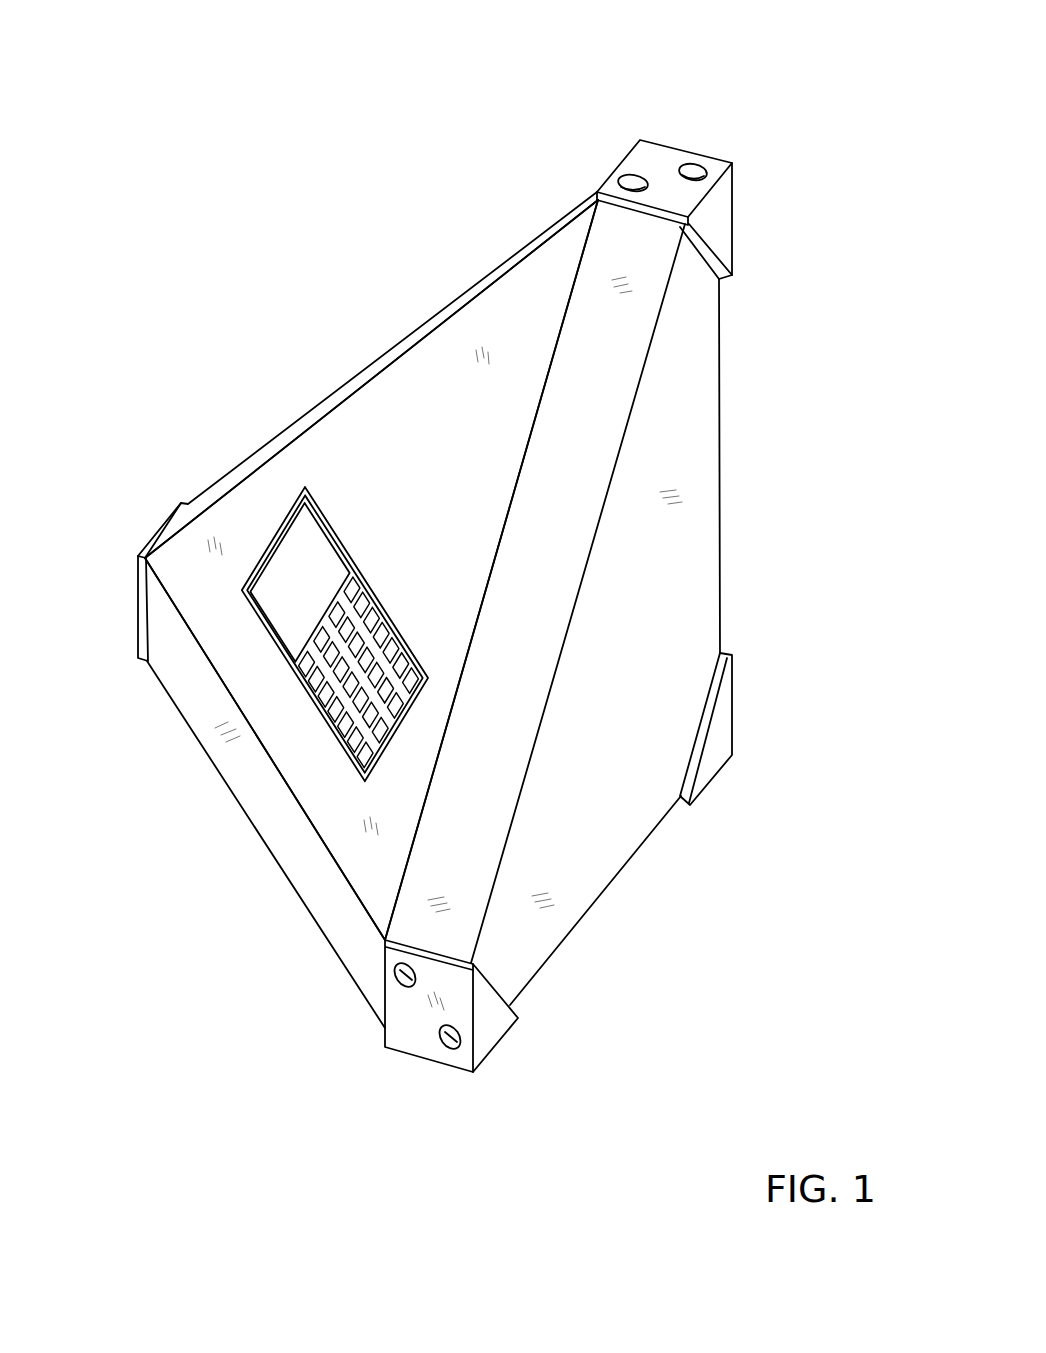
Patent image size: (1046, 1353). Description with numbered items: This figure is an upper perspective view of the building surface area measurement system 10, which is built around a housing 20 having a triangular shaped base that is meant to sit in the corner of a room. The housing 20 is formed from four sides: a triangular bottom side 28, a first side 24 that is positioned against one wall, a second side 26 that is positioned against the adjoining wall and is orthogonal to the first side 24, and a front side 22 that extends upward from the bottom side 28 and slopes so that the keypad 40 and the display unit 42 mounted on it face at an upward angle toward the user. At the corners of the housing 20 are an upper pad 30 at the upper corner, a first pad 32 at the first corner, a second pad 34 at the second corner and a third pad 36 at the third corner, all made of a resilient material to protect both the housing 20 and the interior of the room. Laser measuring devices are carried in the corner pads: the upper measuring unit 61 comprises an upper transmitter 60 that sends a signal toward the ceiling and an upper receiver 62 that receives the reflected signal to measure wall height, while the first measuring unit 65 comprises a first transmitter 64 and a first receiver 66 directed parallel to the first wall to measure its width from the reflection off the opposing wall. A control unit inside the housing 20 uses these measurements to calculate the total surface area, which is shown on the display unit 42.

The building surface area measurement system 10 is at (185, 155).
The housing 20 is at (729, 526).
The front side 22 is at (413, 447).
The first side 24 is at (588, 797).
The second side 26 is at (418, 322).
The bottom side 28 is at (313, 915).
The upper pad 30 is at (733, 203).
The first pad 32 is at (490, 1035).
The second pad 34 is at (157, 534).
The third pad 36 is at (713, 758).
The keypad 40 is at (337, 730).
The display unit 42 is at (273, 608).
The upper transmitter 60 is at (633, 187).
The upper measuring unit 61 is at (682, 158).
The upper receiver 62 is at (692, 175).
The first transmitter 64 is at (400, 977).
The first measuring unit 65 is at (428, 1039).
The first receiver 66 is at (447, 1040).